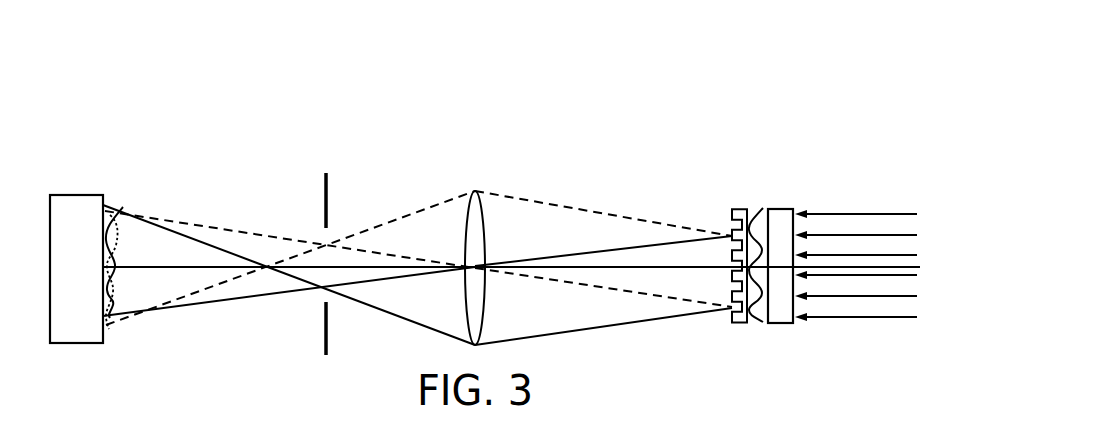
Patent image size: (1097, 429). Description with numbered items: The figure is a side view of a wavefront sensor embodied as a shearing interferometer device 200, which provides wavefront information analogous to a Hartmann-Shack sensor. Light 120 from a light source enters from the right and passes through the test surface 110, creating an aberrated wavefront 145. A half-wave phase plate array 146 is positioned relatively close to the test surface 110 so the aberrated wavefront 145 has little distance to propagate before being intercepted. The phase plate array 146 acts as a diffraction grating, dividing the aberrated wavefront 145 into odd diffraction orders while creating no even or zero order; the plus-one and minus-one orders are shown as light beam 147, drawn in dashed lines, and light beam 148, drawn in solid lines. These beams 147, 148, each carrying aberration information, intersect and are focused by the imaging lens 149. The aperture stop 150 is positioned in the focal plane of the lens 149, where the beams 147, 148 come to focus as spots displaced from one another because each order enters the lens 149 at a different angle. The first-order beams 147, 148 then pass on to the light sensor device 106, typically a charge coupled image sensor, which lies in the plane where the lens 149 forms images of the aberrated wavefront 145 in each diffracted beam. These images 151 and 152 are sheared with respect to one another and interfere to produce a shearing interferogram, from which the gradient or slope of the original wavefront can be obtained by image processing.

The shearing interferometer device 200 is at (663, 80).
The light sensor device 106 is at (73, 196).
The image 151 is at (121, 209).
The image 152 is at (115, 296).
The aperture stop 150 is at (328, 179).
The imaging lens 149 is at (474, 192).
The light beam 147 is at (568, 207).
The light beam 148 is at (630, 325).
The half-wave phase plate array 146 is at (733, 208).
The aberrated wavefront 145 is at (753, 209).
The test surface 110 is at (782, 208).
The light 120 is at (868, 213).